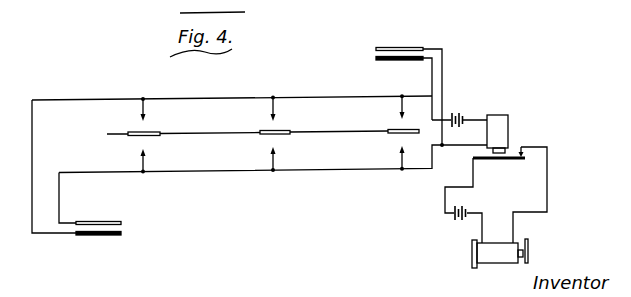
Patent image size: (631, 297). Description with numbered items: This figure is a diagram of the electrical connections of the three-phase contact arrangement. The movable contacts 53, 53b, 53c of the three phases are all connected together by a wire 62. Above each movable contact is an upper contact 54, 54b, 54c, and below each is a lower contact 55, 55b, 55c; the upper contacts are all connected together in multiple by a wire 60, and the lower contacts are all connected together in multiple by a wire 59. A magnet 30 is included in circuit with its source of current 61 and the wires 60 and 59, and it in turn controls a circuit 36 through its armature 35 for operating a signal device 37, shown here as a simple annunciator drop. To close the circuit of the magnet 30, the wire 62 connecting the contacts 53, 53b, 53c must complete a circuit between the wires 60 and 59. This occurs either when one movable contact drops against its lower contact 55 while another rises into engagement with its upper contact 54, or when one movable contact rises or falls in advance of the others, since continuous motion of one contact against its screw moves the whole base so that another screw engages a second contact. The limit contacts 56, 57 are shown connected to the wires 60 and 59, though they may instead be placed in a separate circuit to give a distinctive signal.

The magnet 30 is at (496, 130).
The armature 35 is at (498, 161).
The circuit 36 is at (514, 225).
The signal device 37 is at (495, 248).
The movable contact 53 is at (96, 115).
The movable contact 53b is at (262, 132).
The movable contact 53c is at (388, 131).
The upper contact 54 is at (147, 110).
The upper contact 54b is at (277, 110).
The upper contact 54c is at (401, 110).
The lower contact 55 is at (142, 159).
The lower contact 55b is at (272, 160).
The lower contact 55c is at (401, 160).
The limit contact 56 is at (120, 226).
The limit contact 57 is at (375, 52).
The wire 59 is at (212, 172).
The wire 60 is at (243, 97).
The source of current 61 is at (452, 112).
The wire 62 is at (198, 133).